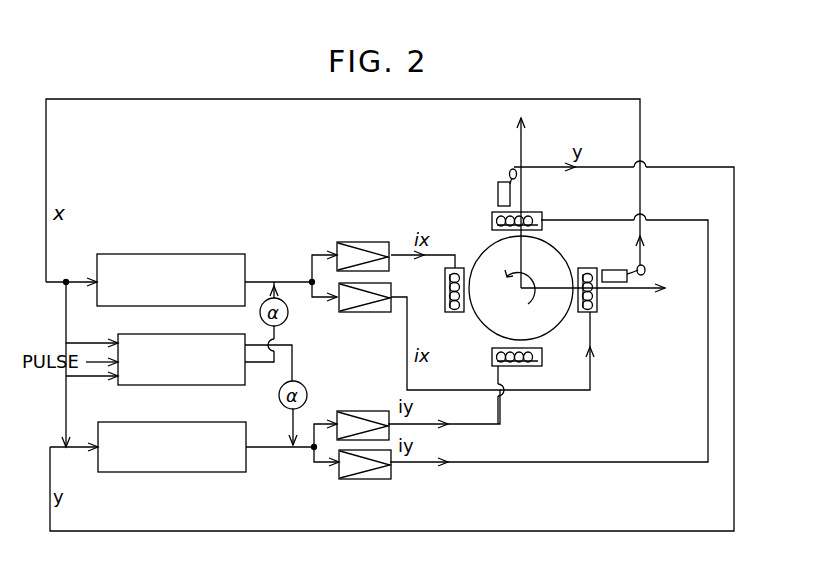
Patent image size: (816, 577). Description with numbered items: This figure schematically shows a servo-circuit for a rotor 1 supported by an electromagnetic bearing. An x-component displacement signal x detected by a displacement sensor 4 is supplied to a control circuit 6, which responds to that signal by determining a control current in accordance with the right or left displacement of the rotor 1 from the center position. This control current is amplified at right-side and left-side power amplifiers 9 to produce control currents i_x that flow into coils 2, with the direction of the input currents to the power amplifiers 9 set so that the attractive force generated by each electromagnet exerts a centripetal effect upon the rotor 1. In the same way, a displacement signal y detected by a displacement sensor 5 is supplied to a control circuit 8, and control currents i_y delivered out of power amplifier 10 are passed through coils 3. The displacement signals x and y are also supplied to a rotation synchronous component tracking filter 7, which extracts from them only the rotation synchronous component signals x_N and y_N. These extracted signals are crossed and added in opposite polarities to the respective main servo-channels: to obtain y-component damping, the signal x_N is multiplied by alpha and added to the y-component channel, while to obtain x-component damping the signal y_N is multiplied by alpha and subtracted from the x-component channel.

The rotor 1 is at (565, 243).
The coils 2 is at (452, 268).
The coils 3 is at (545, 214).
The displacement sensor 4 is at (618, 270).
The displacement sensor 5 is at (498, 184).
The control circuit 6 is at (180, 254).
The rotation synchronous component tracking filter 7 is at (212, 348).
The control circuit 8 is at (170, 472).
The power amplifiers 9 is at (368, 242).
The power amplifier 10 is at (361, 411).